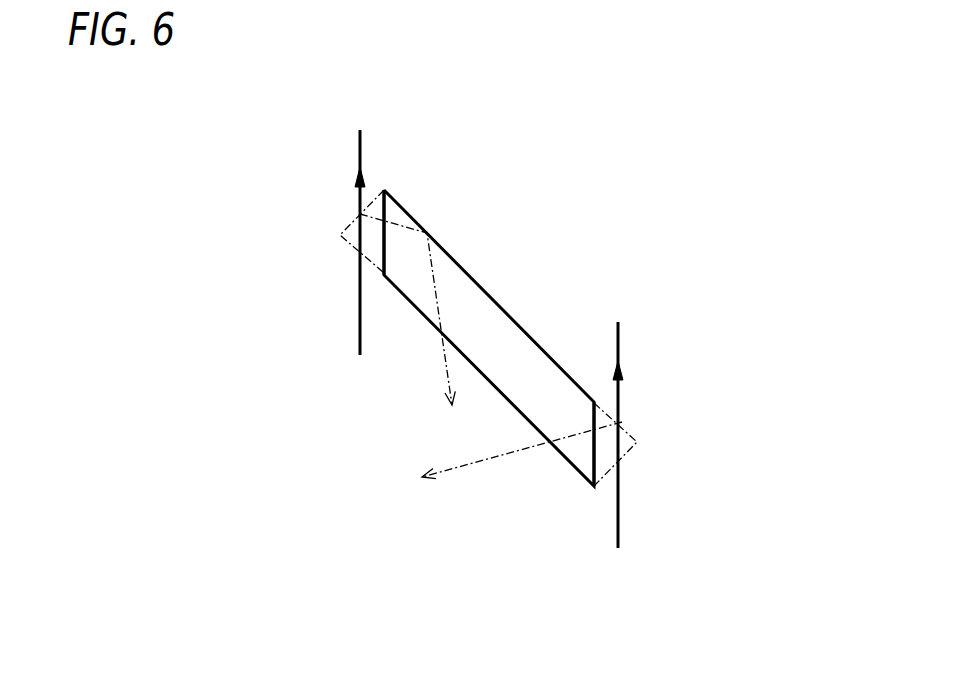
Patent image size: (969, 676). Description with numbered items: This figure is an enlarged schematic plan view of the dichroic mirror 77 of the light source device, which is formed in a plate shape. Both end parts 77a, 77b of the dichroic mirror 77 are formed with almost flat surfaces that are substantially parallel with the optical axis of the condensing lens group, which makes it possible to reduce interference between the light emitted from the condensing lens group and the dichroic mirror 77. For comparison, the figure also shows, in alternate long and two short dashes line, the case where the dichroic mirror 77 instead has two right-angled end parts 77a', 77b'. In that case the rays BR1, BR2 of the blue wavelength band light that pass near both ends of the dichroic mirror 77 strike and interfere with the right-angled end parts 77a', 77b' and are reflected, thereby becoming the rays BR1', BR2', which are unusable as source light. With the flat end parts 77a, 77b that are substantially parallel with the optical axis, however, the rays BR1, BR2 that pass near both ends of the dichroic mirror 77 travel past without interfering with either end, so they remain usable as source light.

The dichroic mirror 77 is at (510, 317).
The end part 77a is at (317, 248).
The right-angled end part 77a' is at (315, 226).
The end part 77b is at (661, 428).
The right-angled end part 77b' is at (663, 459).
The ray BR1 is at (306, 219).
The ray BR1' is at (444, 298).
The ray BR2 is at (672, 425).
The ray BR2' is at (522, 484).